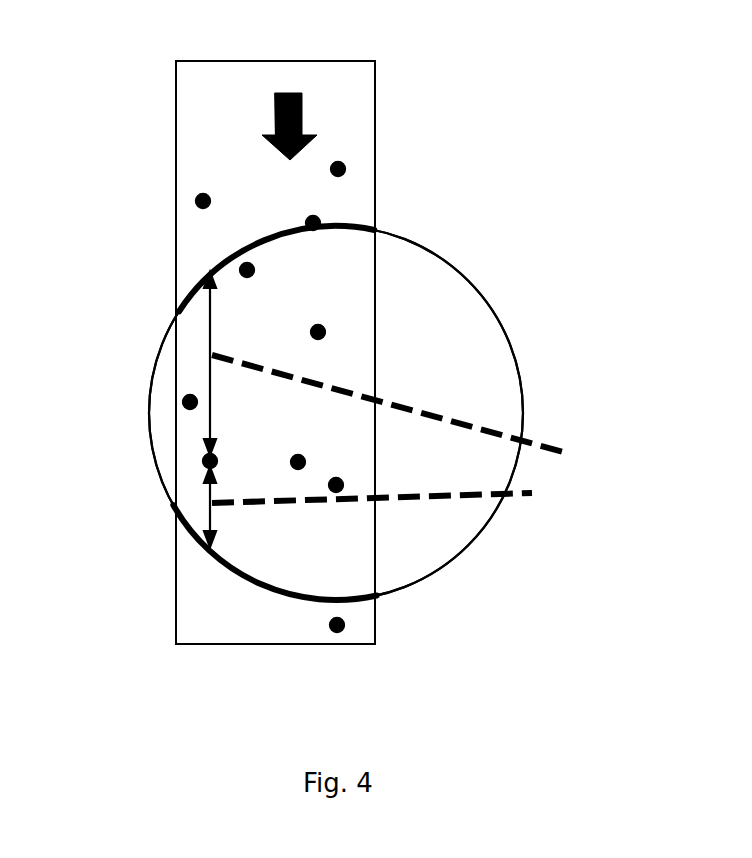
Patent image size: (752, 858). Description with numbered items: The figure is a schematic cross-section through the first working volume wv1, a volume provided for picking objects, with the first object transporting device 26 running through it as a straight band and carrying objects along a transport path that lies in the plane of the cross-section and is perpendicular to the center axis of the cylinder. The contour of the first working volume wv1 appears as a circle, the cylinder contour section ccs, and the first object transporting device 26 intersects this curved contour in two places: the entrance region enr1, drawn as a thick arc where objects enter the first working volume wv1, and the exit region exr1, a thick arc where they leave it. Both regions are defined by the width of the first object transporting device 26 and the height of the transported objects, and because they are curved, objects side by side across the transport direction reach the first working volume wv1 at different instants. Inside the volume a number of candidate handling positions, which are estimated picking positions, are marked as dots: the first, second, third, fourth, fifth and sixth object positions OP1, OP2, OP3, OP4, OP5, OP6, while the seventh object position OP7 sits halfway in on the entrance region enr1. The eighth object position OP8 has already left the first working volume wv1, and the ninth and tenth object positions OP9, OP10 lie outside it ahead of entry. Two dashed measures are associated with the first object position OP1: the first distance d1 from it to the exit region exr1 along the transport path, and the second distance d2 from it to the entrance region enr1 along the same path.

The first object transporting device 26 is at (180, 83).
The cylinder contour section ccs is at (506, 334).
The first working volume wv1 is at (448, 360).
The entrance region enr1 is at (375, 218).
The exit region exr1 is at (253, 582).
The first distance d1 is at (396, 494).
The second distance d2 is at (414, 409).
The first object position OP1 is at (210, 461).
The second object position OP2 is at (336, 485).
The third object position OP3 is at (298, 462).
The fourth object position OP4 is at (190, 402).
The fifth object position OP5 is at (318, 332).
The sixth object position OP6 is at (247, 270).
The seventh object position OP7 is at (313, 223).
The eighth object position OP8 is at (337, 625).
The ninth object position OP9 is at (203, 201).
The tenth object position OP10 is at (338, 169).